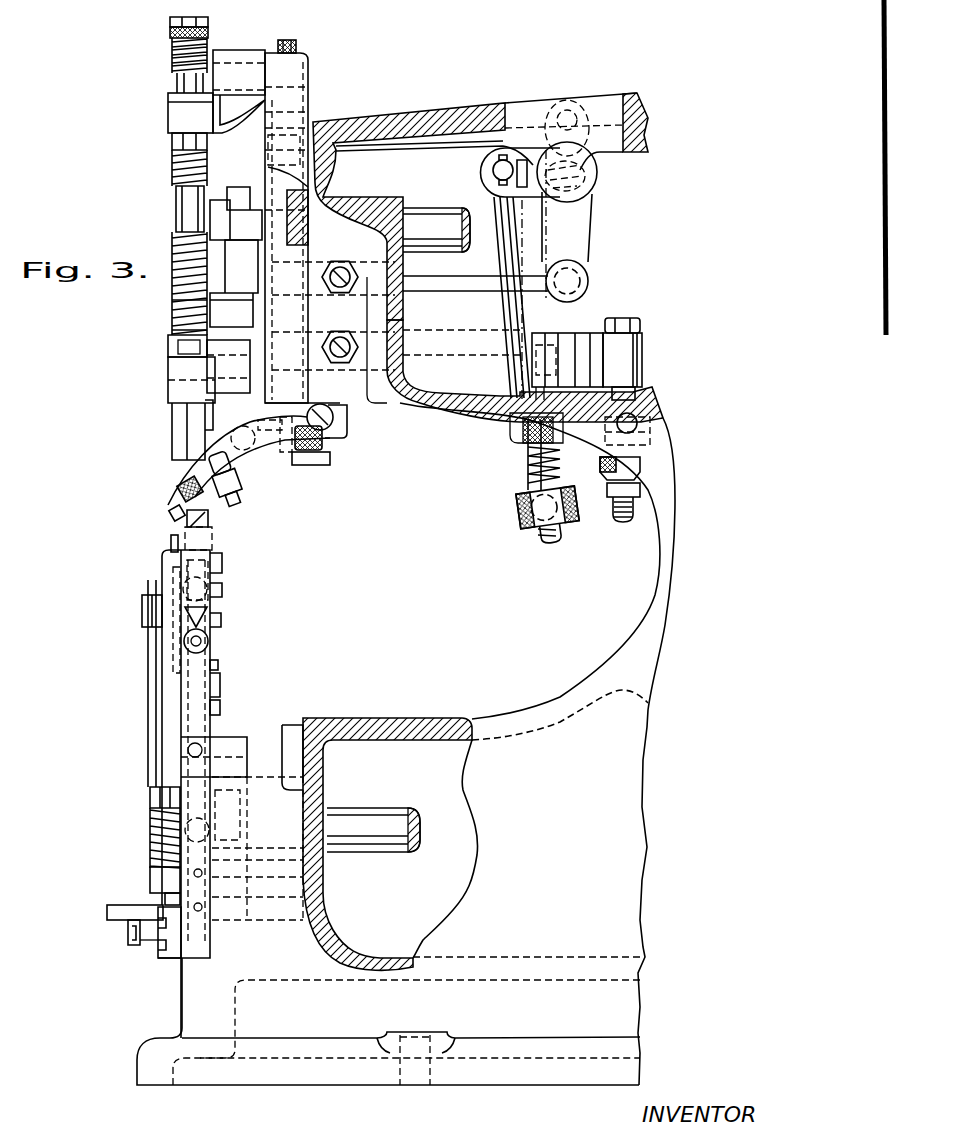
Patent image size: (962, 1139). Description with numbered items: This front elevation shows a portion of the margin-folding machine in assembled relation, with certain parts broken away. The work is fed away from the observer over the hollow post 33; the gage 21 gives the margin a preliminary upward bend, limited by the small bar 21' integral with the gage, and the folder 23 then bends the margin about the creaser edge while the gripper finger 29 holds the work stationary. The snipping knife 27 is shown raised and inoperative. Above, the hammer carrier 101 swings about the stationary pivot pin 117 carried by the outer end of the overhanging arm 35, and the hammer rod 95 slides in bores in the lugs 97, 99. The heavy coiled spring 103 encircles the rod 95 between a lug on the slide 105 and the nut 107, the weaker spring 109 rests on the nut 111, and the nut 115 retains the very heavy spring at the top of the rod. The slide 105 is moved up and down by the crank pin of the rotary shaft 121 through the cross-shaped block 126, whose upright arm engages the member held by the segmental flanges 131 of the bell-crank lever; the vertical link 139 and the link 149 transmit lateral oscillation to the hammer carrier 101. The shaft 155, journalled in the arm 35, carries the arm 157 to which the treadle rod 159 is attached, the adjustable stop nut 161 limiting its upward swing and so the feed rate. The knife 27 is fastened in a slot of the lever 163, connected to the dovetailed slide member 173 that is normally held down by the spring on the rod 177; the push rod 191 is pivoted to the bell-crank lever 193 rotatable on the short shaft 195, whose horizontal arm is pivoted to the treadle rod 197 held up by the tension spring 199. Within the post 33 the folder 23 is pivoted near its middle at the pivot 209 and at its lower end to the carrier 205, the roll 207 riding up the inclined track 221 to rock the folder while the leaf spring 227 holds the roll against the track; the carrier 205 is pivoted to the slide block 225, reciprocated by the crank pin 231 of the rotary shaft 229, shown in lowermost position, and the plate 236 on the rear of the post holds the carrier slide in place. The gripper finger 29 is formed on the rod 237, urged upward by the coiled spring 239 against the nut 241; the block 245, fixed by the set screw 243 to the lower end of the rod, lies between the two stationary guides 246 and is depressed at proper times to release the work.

The gage 21 is at (227, 516).
The small bar 21' is at (170, 498).
The folder 23 is at (212, 532).
The snipping knife 27 is at (222, 470).
The gripper finger 29 is at (172, 540).
The post 33 is at (170, 650).
The overhanging arm 35 is at (300, 67).
The rod 95 is at (178, 19).
The lug 97 is at (177, 393).
The lug 99 is at (178, 112).
The hammer carrier 101 is at (228, 55).
The coiled spring 103 is at (178, 165).
The slide 105 is at (180, 203).
The nut 107 is at (178, 140).
The coiled spring 109 is at (180, 248).
The nut 111 is at (178, 311).
The nut 115 is at (178, 33).
The pivot pin 117 is at (233, 73).
The rotary shaft 121 is at (435, 223).
The block 126 is at (237, 197).
The segmental flanges 131 is at (243, 250).
The vertical link 139 is at (177, 338).
The link 149 is at (262, 420).
The shaft 155 is at (470, 357).
The arm 157 is at (630, 352).
The treadle rod 159 is at (617, 523).
The stop nut 161 is at (620, 468).
The lever 163 is at (313, 447).
The slide member 173 is at (340, 423).
The rod 177 is at (280, 143).
The push rod 191 is at (474, 285).
The bell-crank lever 193 is at (518, 137).
The horizontal shaft 195 is at (597, 187).
The treadle rod 197 is at (543, 542).
The tension spring 199 is at (523, 477).
The carrier 205 is at (218, 669).
The roll 207 is at (215, 645).
The pivot 209 is at (207, 578).
The track 221 is at (218, 623).
The slide block 225 is at (227, 780).
The leaf spring 227 is at (219, 713).
The rotary shaft 229 is at (387, 840).
The crank pin 231 is at (223, 833).
The plate 236 is at (200, 583).
The rod 237 is at (160, 567).
The coiled spring 239 is at (157, 833).
The nut 241 is at (157, 800).
The set screw 243 is at (127, 938).
The block 245 is at (107, 912).
The stationary guides 246 is at (167, 953).